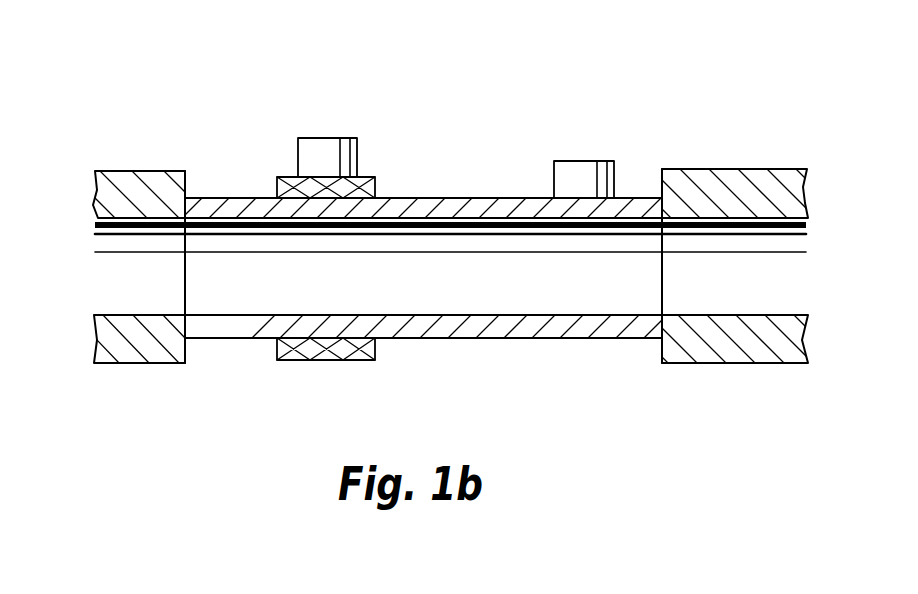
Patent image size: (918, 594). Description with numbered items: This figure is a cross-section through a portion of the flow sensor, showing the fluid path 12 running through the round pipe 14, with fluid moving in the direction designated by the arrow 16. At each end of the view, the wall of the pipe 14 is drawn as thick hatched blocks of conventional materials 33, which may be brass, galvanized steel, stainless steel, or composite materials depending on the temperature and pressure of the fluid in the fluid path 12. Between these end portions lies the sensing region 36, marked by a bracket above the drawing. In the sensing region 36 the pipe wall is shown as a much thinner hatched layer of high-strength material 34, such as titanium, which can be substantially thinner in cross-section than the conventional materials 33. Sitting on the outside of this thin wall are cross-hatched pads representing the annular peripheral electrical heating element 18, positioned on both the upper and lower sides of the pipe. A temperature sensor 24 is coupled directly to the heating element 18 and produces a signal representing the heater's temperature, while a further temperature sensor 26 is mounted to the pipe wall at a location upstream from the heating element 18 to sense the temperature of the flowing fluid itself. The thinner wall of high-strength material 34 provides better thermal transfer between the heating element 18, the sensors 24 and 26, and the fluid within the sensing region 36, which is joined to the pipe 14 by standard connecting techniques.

The fluid path 12 is at (246, 309).
The round pipe 14 is at (165, 171).
The arrow 16 is at (620, 278).
The heating element 18 is at (277, 180).
The temperature sensor 24 is at (358, 156).
The further temperature sensor 26 is at (616, 164).
The conventional materials 33 is at (130, 171).
The high-strength material 34 is at (470, 197).
The sensing region 36 is at (610, 123).